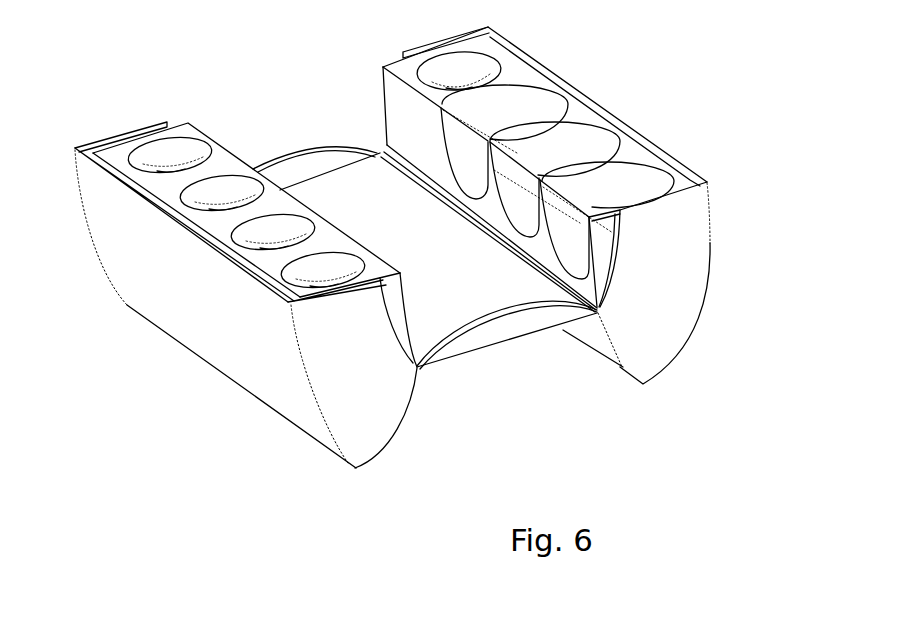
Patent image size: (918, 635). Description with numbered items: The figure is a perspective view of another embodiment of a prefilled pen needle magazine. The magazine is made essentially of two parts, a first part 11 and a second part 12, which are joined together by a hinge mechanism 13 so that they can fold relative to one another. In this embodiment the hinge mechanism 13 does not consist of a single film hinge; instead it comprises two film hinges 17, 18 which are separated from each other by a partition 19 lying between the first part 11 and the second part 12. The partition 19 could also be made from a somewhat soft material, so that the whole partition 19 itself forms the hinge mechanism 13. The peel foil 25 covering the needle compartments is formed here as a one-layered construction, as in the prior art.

The first part 11 is at (203, 320).
The second part 12 is at (586, 235).
The hinge mechanism 13 is at (288, 133).
The film hinge 17 is at (417, 368).
The film hinge 18 is at (597, 313).
The partition 19 is at (357, 200).
The peel foil 25 is at (603, 187).